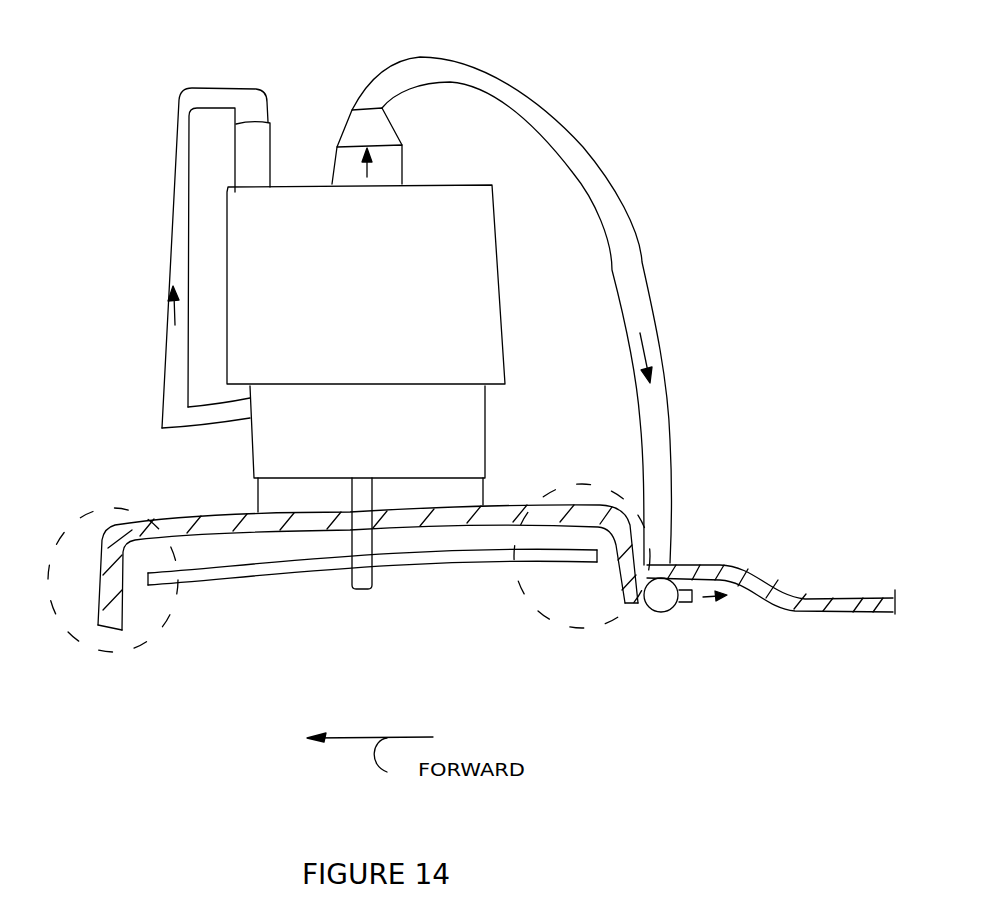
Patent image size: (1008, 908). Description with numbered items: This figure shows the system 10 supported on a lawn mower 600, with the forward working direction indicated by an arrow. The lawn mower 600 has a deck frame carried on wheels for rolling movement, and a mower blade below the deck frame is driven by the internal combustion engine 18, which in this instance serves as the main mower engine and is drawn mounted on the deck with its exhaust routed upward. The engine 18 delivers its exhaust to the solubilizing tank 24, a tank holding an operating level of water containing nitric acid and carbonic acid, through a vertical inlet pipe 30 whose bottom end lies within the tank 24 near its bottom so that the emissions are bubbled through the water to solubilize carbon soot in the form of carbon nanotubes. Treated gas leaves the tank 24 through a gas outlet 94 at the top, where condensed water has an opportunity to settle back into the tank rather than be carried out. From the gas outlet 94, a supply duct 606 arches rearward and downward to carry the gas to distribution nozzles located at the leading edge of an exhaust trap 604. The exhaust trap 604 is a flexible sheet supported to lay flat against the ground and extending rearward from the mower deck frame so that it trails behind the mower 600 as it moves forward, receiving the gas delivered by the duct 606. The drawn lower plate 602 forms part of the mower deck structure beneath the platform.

The system 10 is at (137, 260).
The internal combustion engine 18 is at (250, 450).
The solubilizing tank 24 is at (496, 283).
The vertical inlet pipe 30 is at (267, 143).
The gas outlet 94 is at (340, 163).
The lawn mower 600 is at (94, 492).
The lower plate 602 is at (243, 573).
The exhaust trap 604 is at (782, 580).
The supply duct 606 is at (667, 418).